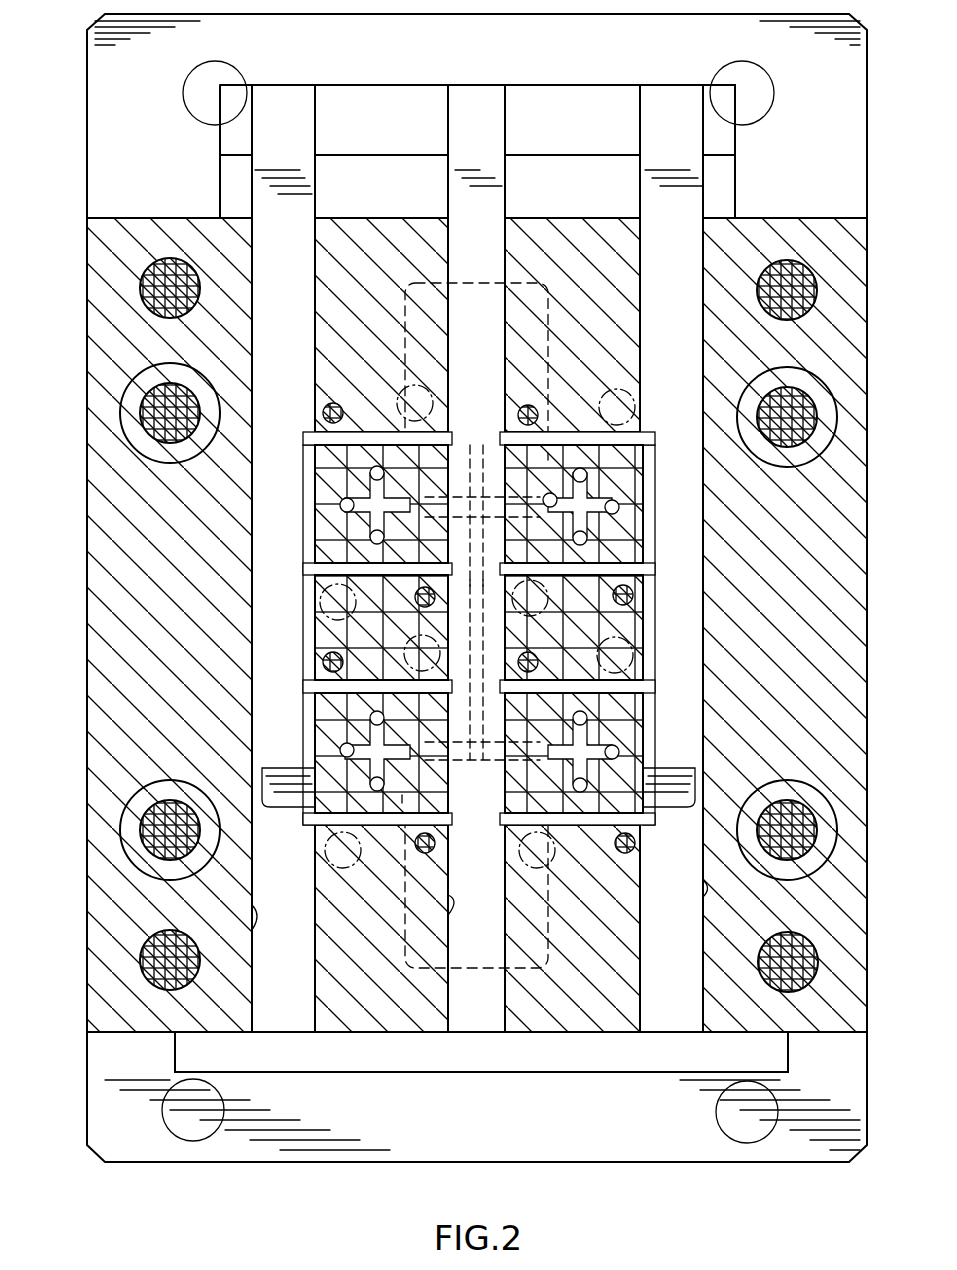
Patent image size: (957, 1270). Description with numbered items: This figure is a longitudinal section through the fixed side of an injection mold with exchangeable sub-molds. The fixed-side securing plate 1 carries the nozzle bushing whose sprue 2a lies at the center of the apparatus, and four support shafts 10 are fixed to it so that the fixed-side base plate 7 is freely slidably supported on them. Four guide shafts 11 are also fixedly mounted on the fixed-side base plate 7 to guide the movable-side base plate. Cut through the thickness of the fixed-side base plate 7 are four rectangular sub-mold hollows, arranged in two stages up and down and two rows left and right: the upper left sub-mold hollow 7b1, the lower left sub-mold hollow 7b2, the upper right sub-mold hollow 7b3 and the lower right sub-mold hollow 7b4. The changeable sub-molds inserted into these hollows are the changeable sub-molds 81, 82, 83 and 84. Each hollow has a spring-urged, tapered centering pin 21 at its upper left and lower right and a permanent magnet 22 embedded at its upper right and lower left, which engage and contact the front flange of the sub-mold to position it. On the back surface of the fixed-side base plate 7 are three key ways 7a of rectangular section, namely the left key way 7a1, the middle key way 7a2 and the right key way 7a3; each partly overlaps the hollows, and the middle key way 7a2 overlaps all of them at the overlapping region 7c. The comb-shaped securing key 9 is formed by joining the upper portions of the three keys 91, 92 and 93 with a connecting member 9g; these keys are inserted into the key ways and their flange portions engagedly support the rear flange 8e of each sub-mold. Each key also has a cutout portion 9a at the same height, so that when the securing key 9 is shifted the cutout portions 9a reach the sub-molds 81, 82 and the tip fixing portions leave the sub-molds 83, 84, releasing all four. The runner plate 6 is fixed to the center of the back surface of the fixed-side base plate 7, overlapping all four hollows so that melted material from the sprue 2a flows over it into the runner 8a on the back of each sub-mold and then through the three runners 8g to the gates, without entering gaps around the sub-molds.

The fixed-side securing plate 1 is at (690, 28).
The sprue 2a is at (528, 657).
The runner plate 6 is at (548, 330).
The fixed-side base plate 7 is at (87, 540).
The key way 7a is at (500, 253).
The key way 7a1 is at (253, 925).
The key way 7a2 is at (448, 935).
The key way 7a3 is at (705, 888).
The sub-mold hollow 7b1 is at (305, 495).
The sub-mold hollow 7b2 is at (300, 727).
The sub-mold hollow 7b3 is at (567, 442).
The sub-mold hollow 7b4 is at (660, 742).
The overlapping region 7c is at (665, 515).
The runner 8a is at (475, 633).
The rear flange 8e is at (305, 445).
The runner 8g is at (643, 462).
The securing key 9 is at (385, 85).
The cutout portion 9a is at (322, 606).
The connecting member 9g is at (586, 106).
The support shaft 10 is at (140, 395).
The guide shaft 11 is at (152, 286).
The centering pin 21 is at (323, 410).
The permanent magnet 22 is at (400, 393).
The changeable sub-mold 81 is at (413, 467).
The changeable sub-mold 82 is at (645, 487).
The changeable sub-mold 83 is at (312, 822).
The changeable sub-mold 84 is at (580, 828).
The key 91 is at (283, 558).
The key 92 is at (476, 625).
The key 93 is at (671, 558).